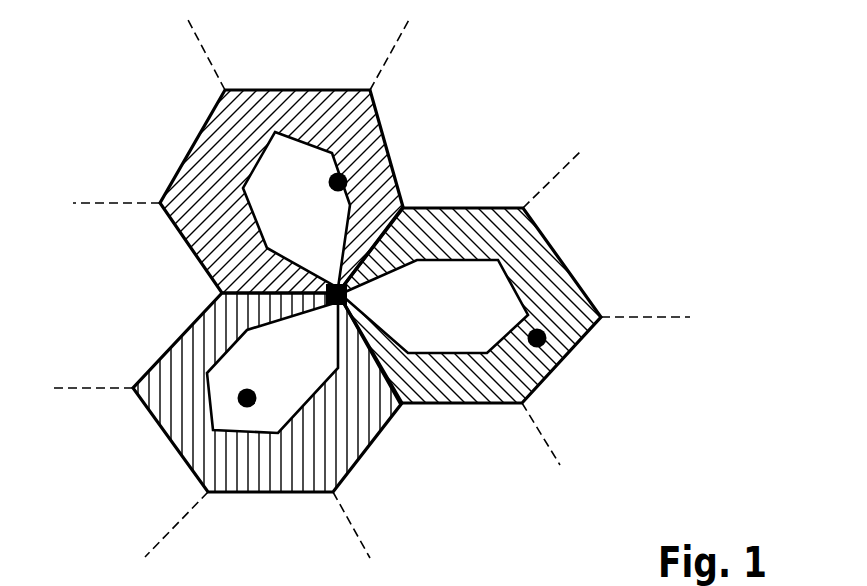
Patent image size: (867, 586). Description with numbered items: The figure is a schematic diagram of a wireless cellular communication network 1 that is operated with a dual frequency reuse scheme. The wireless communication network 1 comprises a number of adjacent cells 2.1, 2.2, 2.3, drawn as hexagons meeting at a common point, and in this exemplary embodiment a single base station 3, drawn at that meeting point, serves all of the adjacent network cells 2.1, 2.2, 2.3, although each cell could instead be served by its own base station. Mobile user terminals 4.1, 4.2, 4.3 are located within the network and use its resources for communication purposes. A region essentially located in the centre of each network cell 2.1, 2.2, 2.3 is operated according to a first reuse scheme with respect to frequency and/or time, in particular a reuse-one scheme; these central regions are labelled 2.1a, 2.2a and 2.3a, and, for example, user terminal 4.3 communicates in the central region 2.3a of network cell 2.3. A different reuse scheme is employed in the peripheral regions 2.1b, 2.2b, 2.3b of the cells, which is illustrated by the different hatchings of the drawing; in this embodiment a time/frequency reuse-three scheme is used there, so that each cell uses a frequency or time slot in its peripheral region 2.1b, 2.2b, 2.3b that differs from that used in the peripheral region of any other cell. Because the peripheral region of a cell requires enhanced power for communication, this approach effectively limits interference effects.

The wireless communication network 1 is at (543, 128).
The network cell 2.1 is at (377, 112).
The central region of network cell 2.1 2.1a is at (318, 219).
The peripheral region of network cell 2.1 2.1b is at (268, 107).
The network cell 2.2 is at (572, 268).
The central region of network cell 2.2 2.2a is at (472, 320).
The peripheral region of network cell 2.2 2.2b is at (525, 385).
The network cell 2.3 is at (188, 467).
The central region of network cell 2.3 2.3a is at (308, 374).
The peripheral region of network cell 2.3 2.3b is at (158, 405).
The base station 3 is at (332, 283).
The user terminal 4.1 is at (347, 181).
The user terminal 4.2 is at (546, 343).
The user terminal 4.3 is at (238, 403).